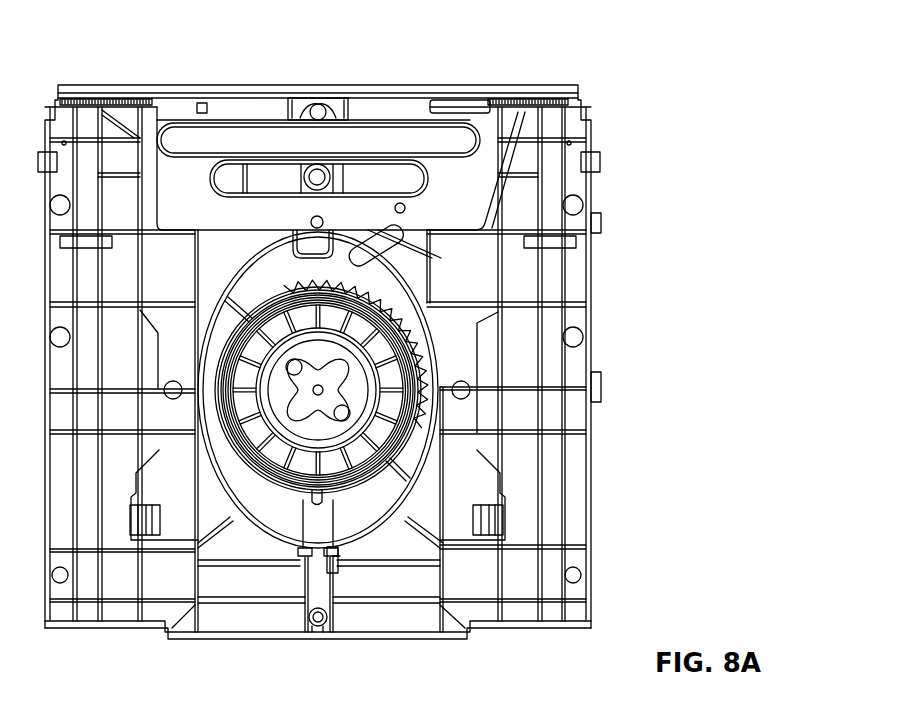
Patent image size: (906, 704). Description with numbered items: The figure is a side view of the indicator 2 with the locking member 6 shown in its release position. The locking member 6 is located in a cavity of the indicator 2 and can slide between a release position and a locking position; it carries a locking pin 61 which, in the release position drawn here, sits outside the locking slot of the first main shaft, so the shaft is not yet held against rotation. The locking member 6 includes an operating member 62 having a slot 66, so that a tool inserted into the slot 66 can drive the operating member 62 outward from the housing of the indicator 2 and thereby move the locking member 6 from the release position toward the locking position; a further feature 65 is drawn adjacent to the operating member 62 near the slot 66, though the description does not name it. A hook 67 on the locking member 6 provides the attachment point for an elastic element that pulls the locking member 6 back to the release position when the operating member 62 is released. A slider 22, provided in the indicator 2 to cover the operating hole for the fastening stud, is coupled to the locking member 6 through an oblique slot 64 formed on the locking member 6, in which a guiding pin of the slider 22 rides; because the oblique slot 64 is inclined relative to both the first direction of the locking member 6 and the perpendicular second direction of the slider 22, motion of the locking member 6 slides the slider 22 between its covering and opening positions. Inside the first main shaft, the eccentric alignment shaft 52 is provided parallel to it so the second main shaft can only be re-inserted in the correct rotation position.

The indicator 2 is at (90, 38).
The slider 22 is at (195, 185).
The operating member 62 is at (293, 100).
The slot 66 is at (318, 100).
The pin 65 is at (323, 114).
The oblique slot 64 is at (373, 237).
The locking member 6 is at (220, 474).
The alignment shaft 52 is at (350, 412).
The locking pin 61 is at (313, 515).
The hook 67 is at (330, 554).